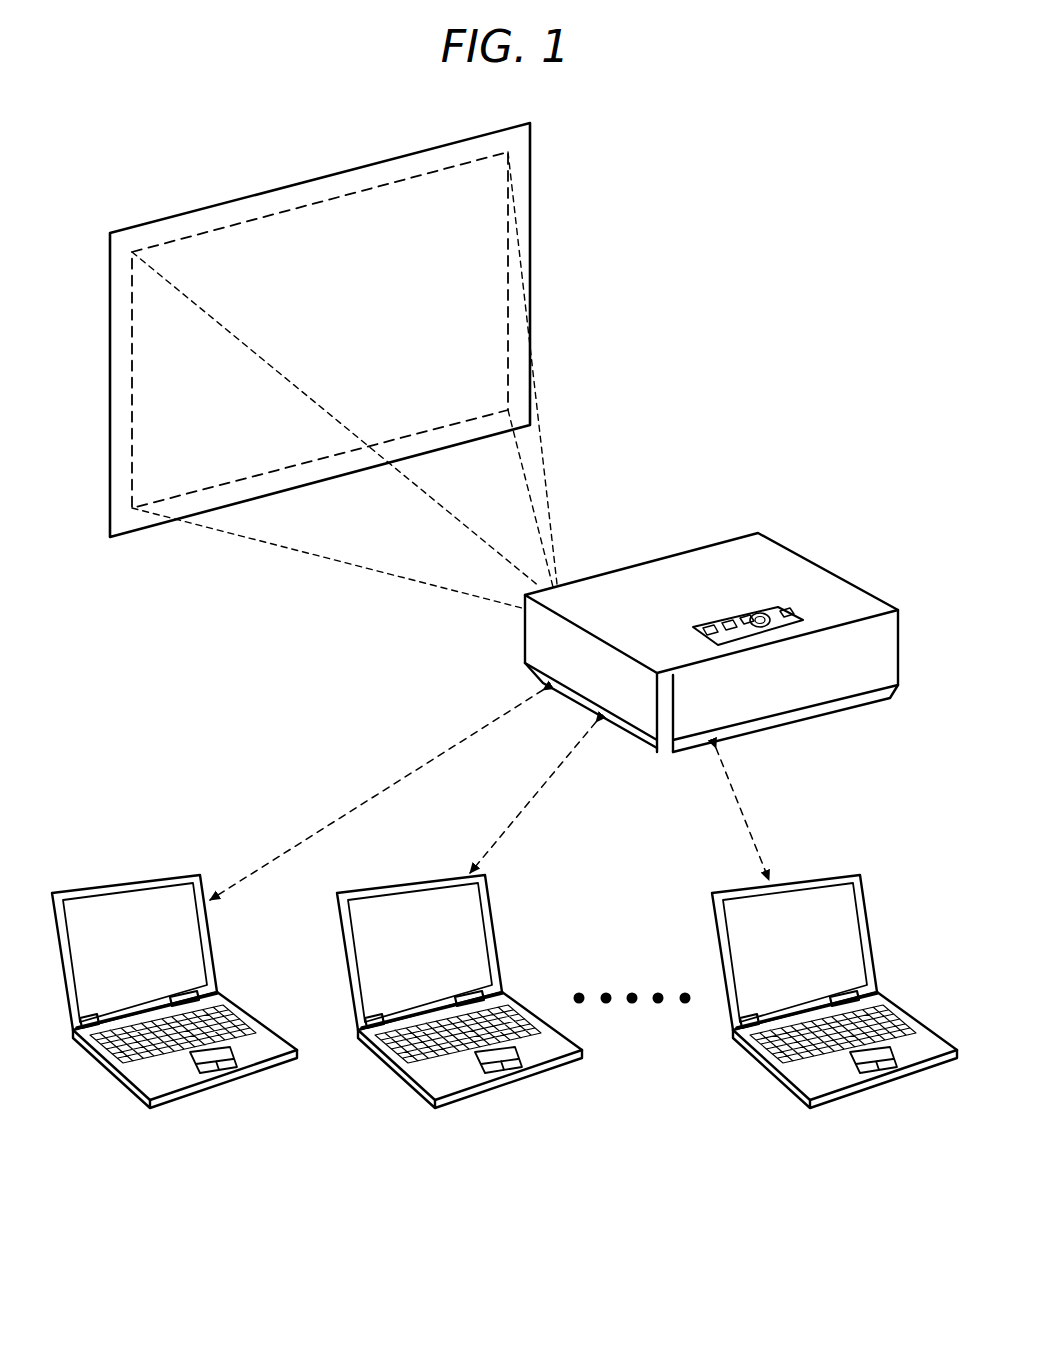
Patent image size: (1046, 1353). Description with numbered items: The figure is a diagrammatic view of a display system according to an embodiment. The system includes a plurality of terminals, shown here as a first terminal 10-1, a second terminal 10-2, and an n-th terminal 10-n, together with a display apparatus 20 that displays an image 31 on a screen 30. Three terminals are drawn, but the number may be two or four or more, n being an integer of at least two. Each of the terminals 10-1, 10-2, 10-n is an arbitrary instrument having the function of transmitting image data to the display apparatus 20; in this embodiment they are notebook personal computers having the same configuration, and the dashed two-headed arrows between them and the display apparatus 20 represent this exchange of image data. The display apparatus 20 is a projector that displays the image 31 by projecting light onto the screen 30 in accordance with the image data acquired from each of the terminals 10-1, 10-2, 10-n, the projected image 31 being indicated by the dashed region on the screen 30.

The first terminal 10-1 is at (227, 1079).
The second terminal 10-2 is at (512, 1079).
The n-th terminal 10-n is at (887, 1079).
The display apparatus 20 is at (812, 573).
The screen 30 is at (120, 326).
The image 31 is at (381, 182).